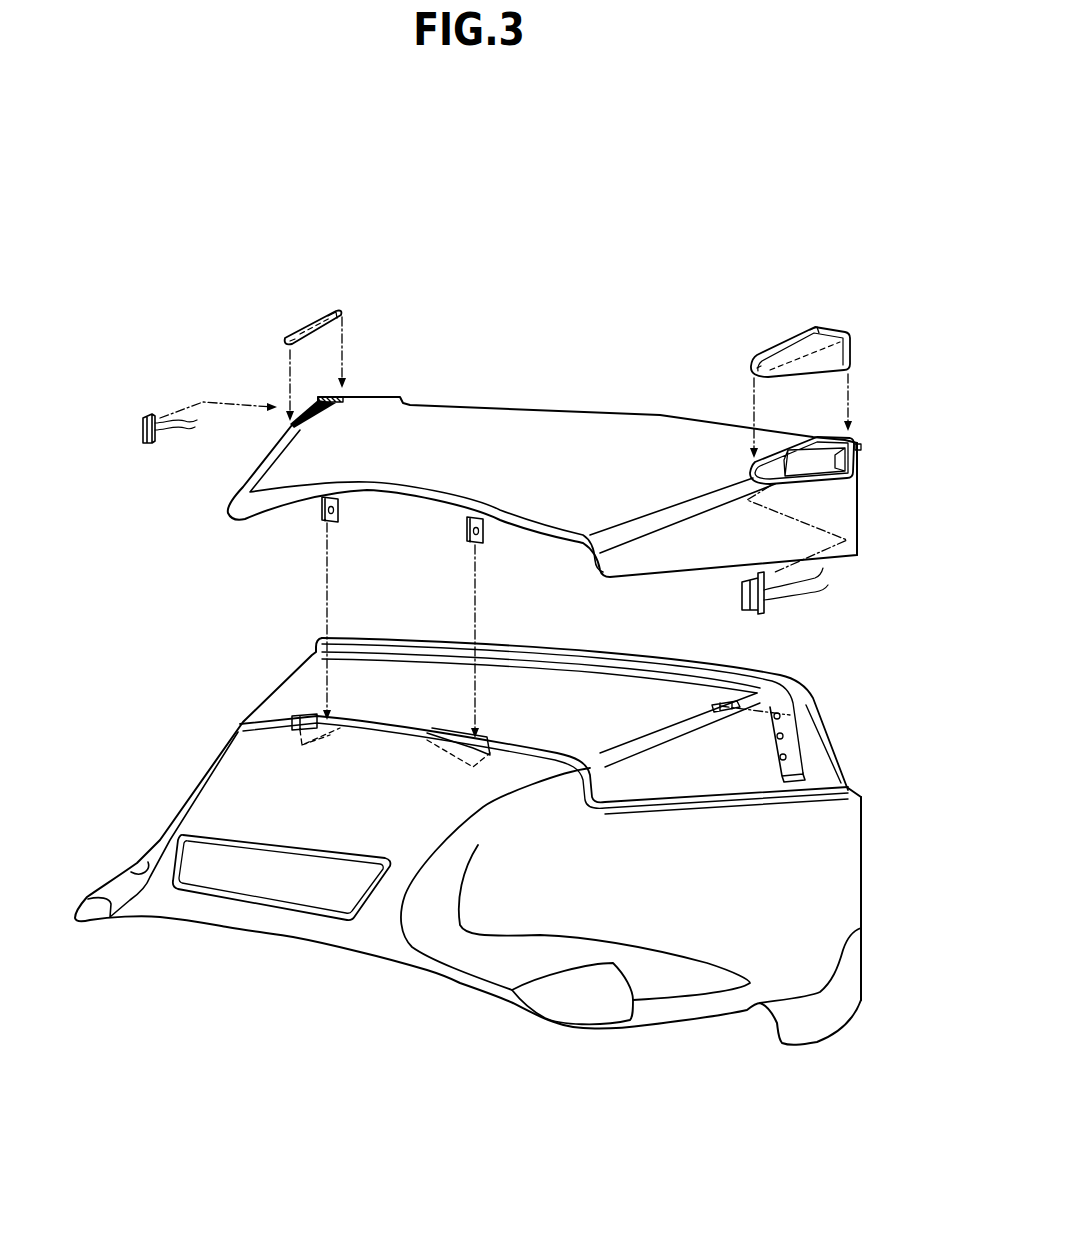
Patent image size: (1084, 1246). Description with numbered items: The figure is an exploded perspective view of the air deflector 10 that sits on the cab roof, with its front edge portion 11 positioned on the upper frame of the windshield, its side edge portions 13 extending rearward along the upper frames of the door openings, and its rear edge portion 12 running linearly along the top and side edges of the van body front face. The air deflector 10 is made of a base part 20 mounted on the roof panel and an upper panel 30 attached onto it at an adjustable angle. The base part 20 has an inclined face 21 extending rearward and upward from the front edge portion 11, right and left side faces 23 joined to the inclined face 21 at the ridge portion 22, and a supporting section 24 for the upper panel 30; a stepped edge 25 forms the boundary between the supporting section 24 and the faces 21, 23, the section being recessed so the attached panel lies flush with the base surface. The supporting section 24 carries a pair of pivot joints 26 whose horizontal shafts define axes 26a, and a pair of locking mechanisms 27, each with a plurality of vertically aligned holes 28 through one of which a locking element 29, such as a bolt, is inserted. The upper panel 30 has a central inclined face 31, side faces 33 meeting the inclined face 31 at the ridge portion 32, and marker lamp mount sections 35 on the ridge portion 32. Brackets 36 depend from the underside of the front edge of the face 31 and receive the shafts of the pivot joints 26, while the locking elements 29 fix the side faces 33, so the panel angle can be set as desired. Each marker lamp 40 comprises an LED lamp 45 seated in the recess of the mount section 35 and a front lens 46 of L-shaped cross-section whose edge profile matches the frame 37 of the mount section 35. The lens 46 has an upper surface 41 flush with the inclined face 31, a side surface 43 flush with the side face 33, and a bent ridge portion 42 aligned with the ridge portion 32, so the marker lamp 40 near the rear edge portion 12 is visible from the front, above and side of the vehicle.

The air deflector 10 is at (142, 578).
The front edge portion 11 is at (282, 927).
The rear edge portion 12 is at (655, 412).
The side edge portion 13 is at (670, 1015).
The base part 20 is at (226, 679).
The inclined face 21 is at (262, 795).
The ridge portion 22 is at (167, 833).
The side face 23 is at (778, 898).
The supporting section 24 is at (502, 663).
The stepped edge 25 is at (737, 801).
The pivot joint 26 is at (452, 728).
The axis 26a is at (297, 712).
The locking mechanism 27 is at (802, 714).
The hole 28 is at (785, 758).
The locking element 29 is at (727, 700).
The upper panel 30 is at (243, 550).
The inclined face 31 is at (488, 445).
The ridge portion 32 is at (247, 470).
The side face 33 is at (697, 543).
The marker lamp mount section 35 is at (272, 393).
The bracket 36 is at (313, 518).
The frame 37 is at (333, 403).
The marker lamp 40 is at (317, 278).
The upper surface 41 is at (317, 315).
The ridge portion 42 is at (300, 325).
The side surface 43 is at (287, 330).
The LED lamp 45 is at (147, 413).
The front lens 46 is at (352, 311).